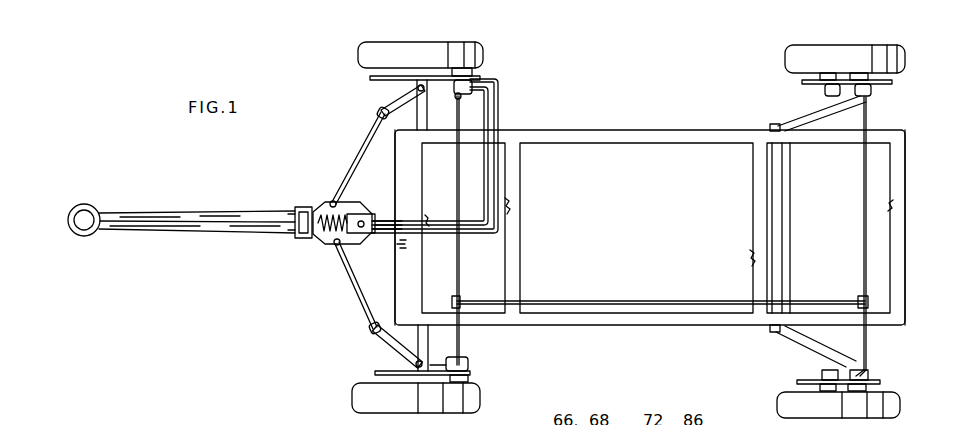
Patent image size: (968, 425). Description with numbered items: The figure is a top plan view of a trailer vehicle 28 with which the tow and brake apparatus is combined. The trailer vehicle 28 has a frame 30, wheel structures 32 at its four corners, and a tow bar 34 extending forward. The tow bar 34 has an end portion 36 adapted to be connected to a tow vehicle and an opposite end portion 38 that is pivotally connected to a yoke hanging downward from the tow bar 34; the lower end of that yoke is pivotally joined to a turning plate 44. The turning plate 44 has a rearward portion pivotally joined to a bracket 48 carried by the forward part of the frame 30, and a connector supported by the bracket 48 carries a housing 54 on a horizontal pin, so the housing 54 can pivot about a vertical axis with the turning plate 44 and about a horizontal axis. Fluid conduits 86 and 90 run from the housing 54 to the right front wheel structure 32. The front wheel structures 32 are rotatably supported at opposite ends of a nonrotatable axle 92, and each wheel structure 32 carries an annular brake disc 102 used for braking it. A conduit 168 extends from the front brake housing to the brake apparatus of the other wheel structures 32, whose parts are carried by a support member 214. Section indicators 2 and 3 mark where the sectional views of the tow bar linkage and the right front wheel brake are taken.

The trailer vehicle 28 is at (905, 196).
The frame 30 is at (397, 160).
The wheel structures 32 is at (358, 55).
The tow bar 34 is at (192, 210).
The end portion 36 is at (90, 204).
The opposite end portion 38 is at (299, 205).
The turning plate 44 is at (333, 201).
The bracket 48 is at (396, 214).
The housing 54 is at (360, 213).
The fluid conduit 86 is at (486, 150).
The fluid conduit 90 is at (500, 114).
The nonrotatable axle 92 is at (428, 122).
The brake disc 102 is at (372, 79).
The conduit 168 is at (866, 126).
The support member 214 is at (809, 122).
The section line 2- 2 is at (285, 222).
The section line 3- 3 is at (415, 26).